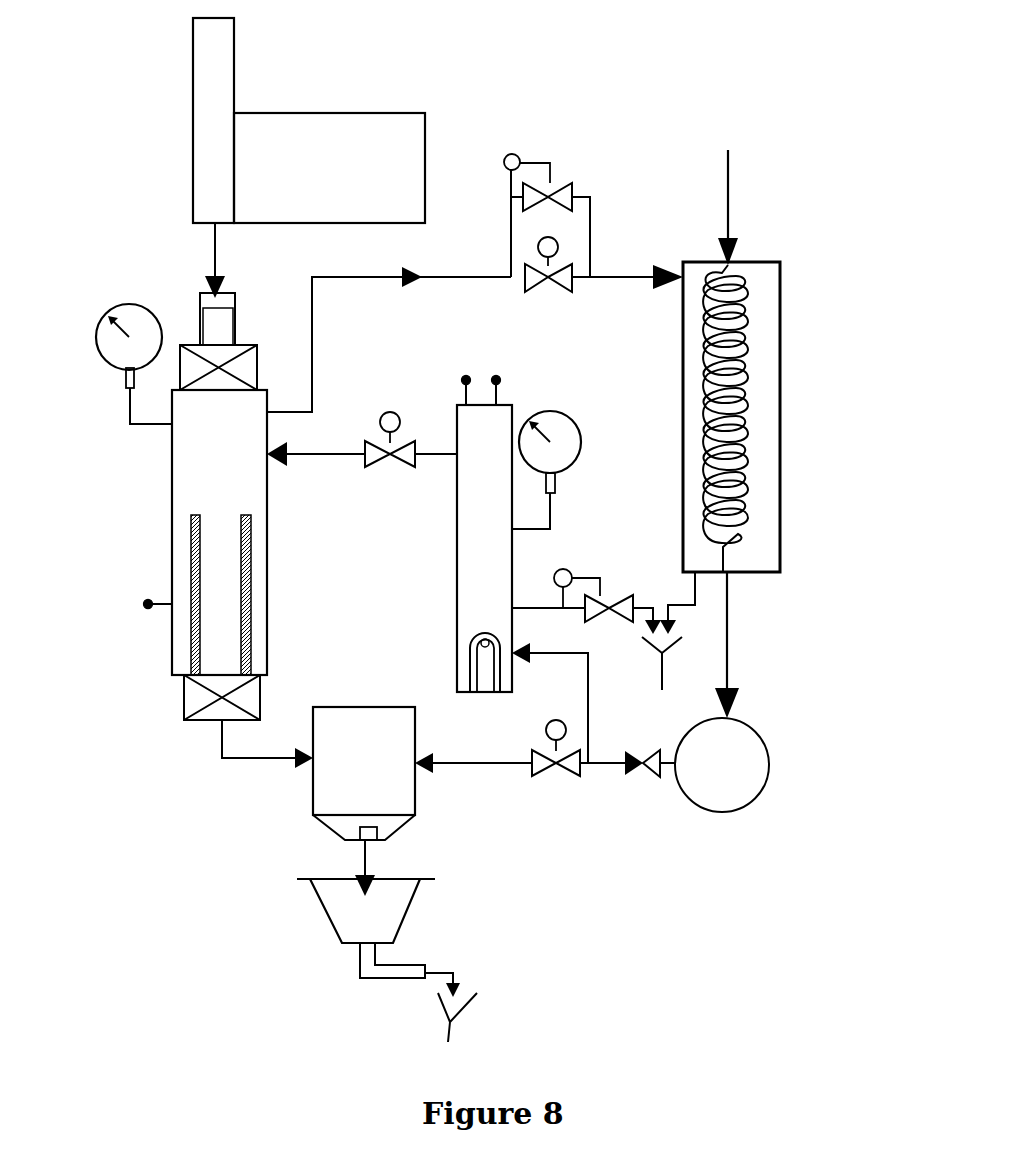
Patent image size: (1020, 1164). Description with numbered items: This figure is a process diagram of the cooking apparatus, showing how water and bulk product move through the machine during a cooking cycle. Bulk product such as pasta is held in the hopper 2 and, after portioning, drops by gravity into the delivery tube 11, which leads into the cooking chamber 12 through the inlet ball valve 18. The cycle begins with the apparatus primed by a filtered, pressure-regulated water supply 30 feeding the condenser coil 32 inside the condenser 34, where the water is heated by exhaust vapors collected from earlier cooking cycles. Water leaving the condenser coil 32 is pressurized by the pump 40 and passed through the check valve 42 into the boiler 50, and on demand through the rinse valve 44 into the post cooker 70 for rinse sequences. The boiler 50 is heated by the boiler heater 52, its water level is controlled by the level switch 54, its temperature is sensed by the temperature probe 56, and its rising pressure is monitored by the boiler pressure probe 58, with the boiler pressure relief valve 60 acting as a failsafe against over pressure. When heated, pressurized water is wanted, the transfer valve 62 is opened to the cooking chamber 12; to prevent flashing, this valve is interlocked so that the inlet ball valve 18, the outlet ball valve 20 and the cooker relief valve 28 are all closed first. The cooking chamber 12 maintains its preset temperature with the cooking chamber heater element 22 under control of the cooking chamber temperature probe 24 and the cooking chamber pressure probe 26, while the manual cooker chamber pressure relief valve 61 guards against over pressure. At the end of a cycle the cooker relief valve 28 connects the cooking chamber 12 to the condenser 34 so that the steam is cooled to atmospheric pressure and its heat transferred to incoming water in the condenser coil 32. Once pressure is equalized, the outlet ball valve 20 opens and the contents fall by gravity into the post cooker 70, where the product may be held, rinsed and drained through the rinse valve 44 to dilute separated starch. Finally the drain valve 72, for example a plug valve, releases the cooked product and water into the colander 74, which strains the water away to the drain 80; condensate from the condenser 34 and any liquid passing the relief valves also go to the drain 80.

The hopper 2 is at (323, 137).
The delivery tube 11 is at (243, 120).
The cooking chamber 12 is at (193, 445).
The inlet ball valve 18 is at (243, 345).
The outlet ball valve 20 is at (186, 715).
The cooking chamber heater element 22 is at (243, 617).
The cooking chamber temperature probe 24 is at (145, 612).
The cooking chamber pressure probe 26 is at (122, 367).
The cooker relief valve 28 is at (573, 295).
The water supply 30 is at (730, 187).
The condenser coil 32 is at (790, 283).
The condenser 34 is at (792, 365).
The pump 40 is at (760, 737).
The check valve 42 is at (655, 775).
The rinse valve 44 is at (568, 778).
The boiler 50 is at (465, 540).
The boiler heater 52 is at (470, 660).
The level switch 54 is at (464, 372).
The temperature probe 56 is at (500, 370).
The boiler pressure probe 58 is at (560, 478).
The boiler pressure relief valve 60 is at (610, 588).
The manual cooker chamber pressure relief valve 61 is at (555, 185).
The transfer valve 62 is at (393, 413).
The post cooker 70 is at (408, 797).
The drain valve 72 is at (380, 837).
The colander 74 is at (387, 917).
The drain 80 is at (681, 650).